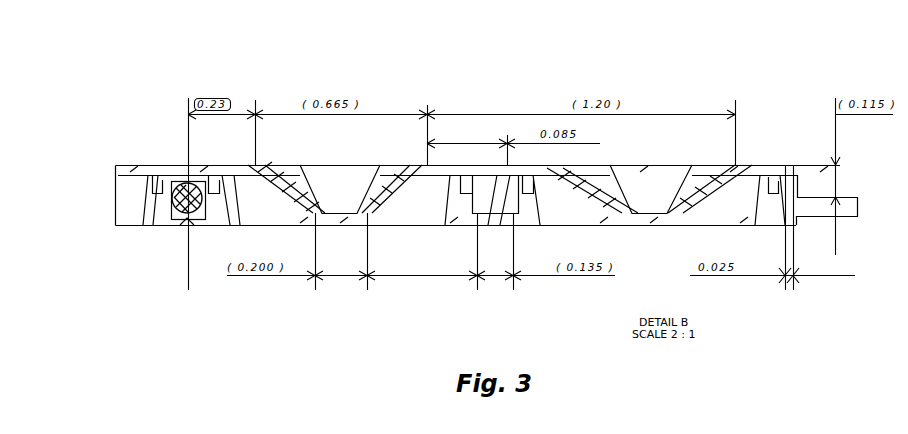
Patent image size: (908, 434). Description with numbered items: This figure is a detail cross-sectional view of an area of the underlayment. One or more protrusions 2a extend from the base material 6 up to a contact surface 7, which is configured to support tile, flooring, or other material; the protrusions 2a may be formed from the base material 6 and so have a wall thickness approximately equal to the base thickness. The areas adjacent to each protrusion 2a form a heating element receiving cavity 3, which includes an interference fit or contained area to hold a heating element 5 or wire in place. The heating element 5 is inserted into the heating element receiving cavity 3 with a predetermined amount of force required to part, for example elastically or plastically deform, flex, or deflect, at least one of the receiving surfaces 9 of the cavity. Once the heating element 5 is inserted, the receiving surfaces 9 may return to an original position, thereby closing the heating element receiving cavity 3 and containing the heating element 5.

The heating element receiving cavity 3 is at (188, 175).
The protrusion 2a is at (548, 170).
The heating element 5 is at (185, 200).
The base material 6 is at (842, 220).
The contact surface 7 is at (760, 167).
The receiving surface 9 is at (508, 196).